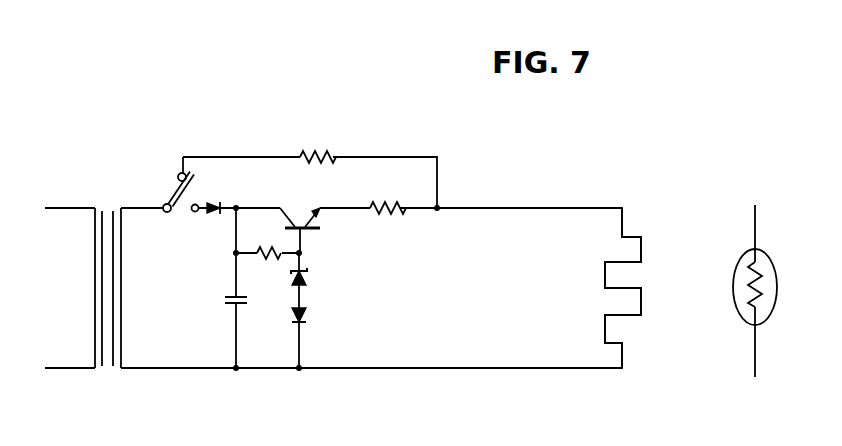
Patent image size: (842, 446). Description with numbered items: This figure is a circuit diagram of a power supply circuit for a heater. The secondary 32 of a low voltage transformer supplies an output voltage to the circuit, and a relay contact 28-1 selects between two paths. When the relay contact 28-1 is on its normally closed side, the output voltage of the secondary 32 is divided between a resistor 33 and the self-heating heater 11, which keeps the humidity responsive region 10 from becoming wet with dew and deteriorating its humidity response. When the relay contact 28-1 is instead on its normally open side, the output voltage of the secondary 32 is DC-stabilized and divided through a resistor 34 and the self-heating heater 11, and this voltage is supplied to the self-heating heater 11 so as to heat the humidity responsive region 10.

The humidity responsive region 10 is at (777, 262).
The self-heating heater 11 is at (646, 255).
The relay contact 28-1 is at (173, 187).
The secondary of low voltage transformer 32 is at (125, 343).
The resistor 33 is at (325, 143).
The resistor 34 is at (387, 217).